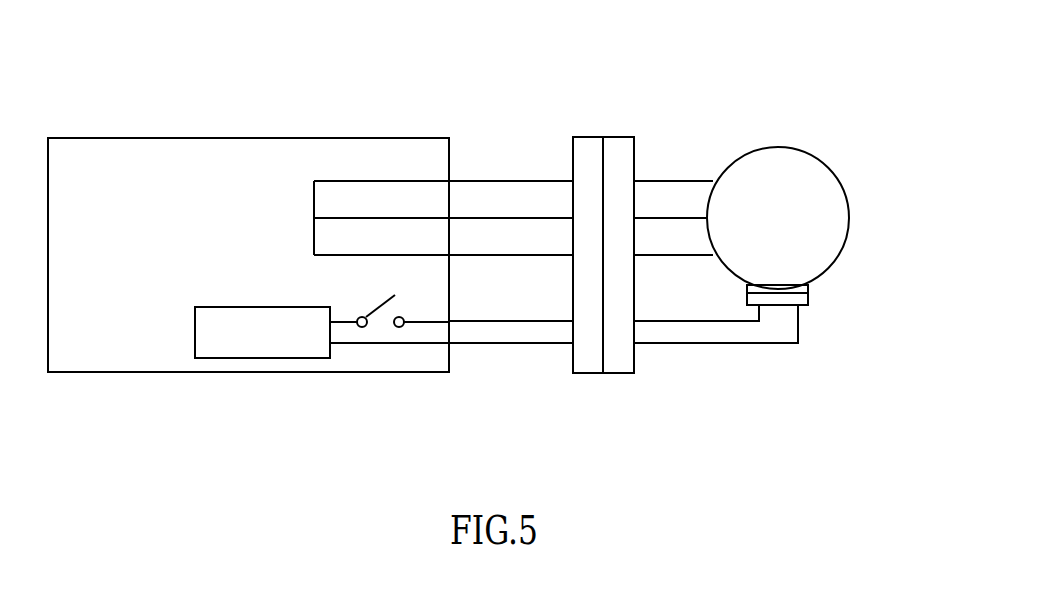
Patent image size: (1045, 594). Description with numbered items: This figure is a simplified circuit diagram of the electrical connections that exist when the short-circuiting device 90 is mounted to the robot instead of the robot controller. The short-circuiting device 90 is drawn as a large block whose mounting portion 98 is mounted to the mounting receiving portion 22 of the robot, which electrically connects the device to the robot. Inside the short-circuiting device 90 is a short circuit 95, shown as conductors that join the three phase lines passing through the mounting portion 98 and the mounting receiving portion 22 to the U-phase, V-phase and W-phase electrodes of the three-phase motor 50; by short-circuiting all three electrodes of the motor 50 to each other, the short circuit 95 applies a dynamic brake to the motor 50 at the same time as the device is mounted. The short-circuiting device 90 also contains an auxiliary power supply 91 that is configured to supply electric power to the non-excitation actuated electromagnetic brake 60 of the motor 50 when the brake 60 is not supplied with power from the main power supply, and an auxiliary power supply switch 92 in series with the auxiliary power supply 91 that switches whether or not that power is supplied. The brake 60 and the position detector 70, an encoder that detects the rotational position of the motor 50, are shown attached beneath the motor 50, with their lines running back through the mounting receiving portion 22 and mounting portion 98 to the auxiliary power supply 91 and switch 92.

The short-circuiting device 90 is at (265, 126).
The short circuit 95 is at (399, 180).
The mounting portion 98 is at (590, 143).
The mounting receiving portion 22 is at (619, 370).
The motor 50 is at (850, 216).
The non-excitation actuated electromagnetic brake 60 is at (810, 287).
The position detector 70 is at (810, 298).
The auxiliary power supply 91 is at (275, 306).
The auxiliary power supply switch 92 is at (372, 306).